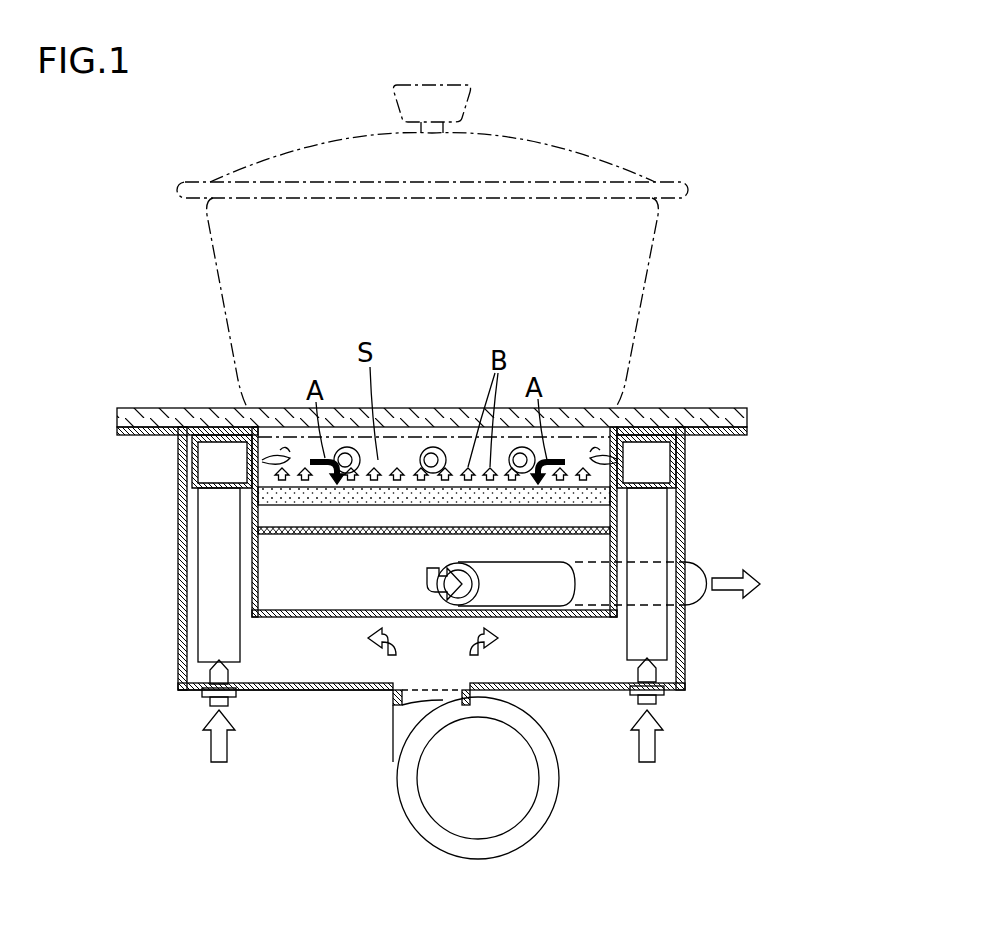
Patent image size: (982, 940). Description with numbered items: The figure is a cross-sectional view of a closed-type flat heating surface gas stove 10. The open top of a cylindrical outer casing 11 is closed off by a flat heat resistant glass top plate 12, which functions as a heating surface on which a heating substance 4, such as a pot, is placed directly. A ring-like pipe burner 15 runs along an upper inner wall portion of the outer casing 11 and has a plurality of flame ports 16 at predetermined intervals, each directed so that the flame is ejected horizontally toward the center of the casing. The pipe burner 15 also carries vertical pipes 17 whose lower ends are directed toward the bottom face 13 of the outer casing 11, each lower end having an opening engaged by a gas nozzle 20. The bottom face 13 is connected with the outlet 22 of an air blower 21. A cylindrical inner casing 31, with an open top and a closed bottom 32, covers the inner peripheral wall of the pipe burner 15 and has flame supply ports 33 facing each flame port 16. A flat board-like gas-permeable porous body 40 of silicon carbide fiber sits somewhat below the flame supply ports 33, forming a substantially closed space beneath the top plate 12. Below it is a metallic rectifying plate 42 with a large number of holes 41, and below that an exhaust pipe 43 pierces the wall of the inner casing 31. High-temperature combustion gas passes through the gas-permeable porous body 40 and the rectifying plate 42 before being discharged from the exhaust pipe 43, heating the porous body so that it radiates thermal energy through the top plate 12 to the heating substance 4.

The heating substance 4 is at (628, 278).
The gas stove 10 is at (90, 370).
The outer casing 11 is at (180, 573).
The top plate 12 is at (700, 408).
The bottom face 13 is at (332, 692).
The pipe burner 15 is at (210, 452).
The flame port 16 is at (247, 462).
The vertical pipe 17 is at (205, 635).
The gas nozzle 20 is at (212, 700).
The air blower 21 is at (478, 822).
The outlet 22 is at (420, 702).
The inner casing 31 is at (258, 548).
The closed bottom 32 is at (292, 620).
The flame supply port 33 is at (275, 440).
The gas-permeable porous body 40 is at (572, 505).
The holes 41 is at (348, 535).
The rectifying plate 42 is at (403, 535).
The exhaust pipe 43 is at (538, 590).